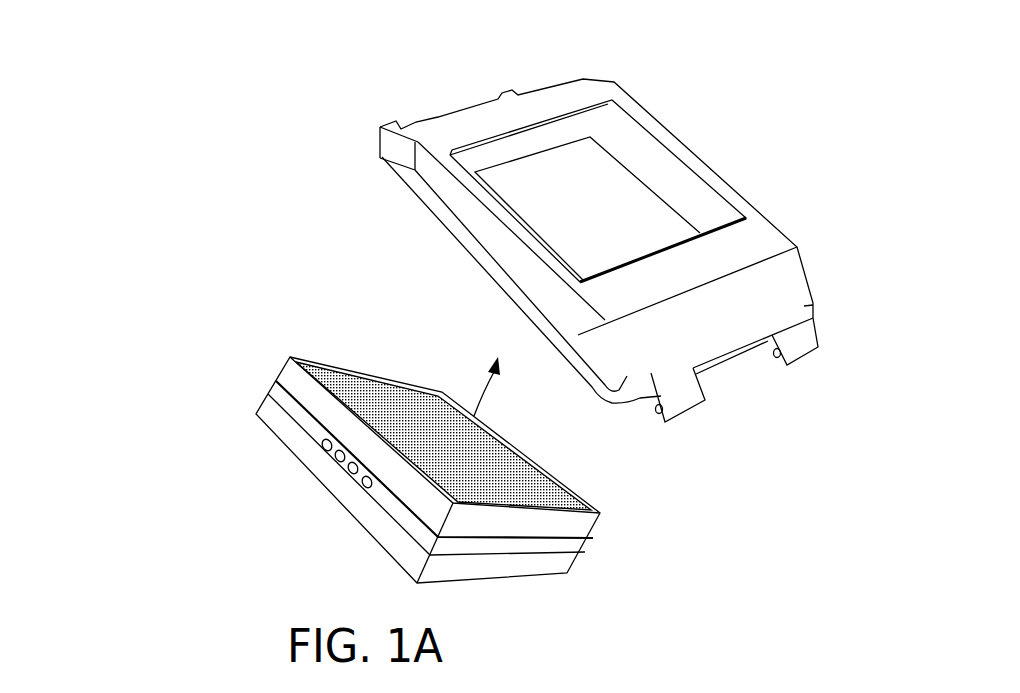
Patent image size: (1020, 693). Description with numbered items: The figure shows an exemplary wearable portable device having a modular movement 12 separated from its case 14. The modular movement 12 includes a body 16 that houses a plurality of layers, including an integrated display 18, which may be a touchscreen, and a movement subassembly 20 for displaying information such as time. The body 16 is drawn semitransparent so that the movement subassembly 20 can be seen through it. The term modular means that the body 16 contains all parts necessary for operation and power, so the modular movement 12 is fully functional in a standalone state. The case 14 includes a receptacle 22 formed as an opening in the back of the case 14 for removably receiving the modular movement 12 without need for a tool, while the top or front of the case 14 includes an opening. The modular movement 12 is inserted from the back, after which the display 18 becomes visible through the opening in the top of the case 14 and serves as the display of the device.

The modular movement 12 is at (421, 410).
The case 14 is at (528, 231).
The body 16 is at (462, 481).
The integrated display 18 is at (443, 419).
The movement subassembly 20 is at (526, 507).
The receptacle 22 is at (492, 161).